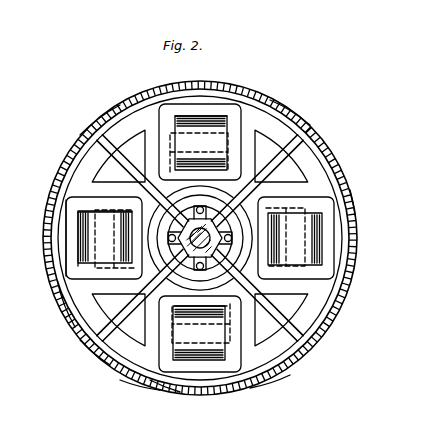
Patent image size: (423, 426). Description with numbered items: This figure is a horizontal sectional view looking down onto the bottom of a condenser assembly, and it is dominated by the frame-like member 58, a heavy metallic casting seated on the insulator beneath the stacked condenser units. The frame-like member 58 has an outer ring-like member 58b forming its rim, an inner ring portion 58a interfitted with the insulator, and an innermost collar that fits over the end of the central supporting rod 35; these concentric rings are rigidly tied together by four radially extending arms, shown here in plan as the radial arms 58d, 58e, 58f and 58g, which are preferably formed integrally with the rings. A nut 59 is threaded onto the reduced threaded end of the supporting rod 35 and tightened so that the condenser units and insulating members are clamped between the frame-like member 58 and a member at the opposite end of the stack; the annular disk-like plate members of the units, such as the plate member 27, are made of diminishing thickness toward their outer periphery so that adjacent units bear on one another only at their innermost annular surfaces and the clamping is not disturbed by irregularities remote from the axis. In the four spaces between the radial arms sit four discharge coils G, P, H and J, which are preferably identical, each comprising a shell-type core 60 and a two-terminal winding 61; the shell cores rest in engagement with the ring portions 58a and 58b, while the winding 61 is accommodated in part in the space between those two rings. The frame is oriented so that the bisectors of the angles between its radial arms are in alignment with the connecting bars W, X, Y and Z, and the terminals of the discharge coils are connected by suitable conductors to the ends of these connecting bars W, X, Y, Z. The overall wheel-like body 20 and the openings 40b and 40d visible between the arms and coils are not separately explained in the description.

The frame-like member 58 is at (291, 123).
The ring portion 58a is at (75, 327).
The outer ring-like member 58b is at (147, 362).
The radial arm 58d is at (108, 134).
The radial arm 58e is at (100, 357).
The radial arm 58f is at (272, 325).
The radial arm 58g is at (289, 128).
The rotor wheel 20 is at (2, 143).
The supporting rod 35 is at (190, 227).
The nut 59 is at (80, 222).
The discharge coil G is at (80, 230).
The annular disk-like plate member 27 is at (78, 247).
The core 60 is at (166, 108).
The winding 61 is at (192, 118).
The connecting bar W is at (115, 276).
The window opening 40b is at (140, 270).
The window opening 40d is at (305, 305).
The discharge coil P is at (200, 178).
The connecting bar X is at (231, 236).
The connecting bar Y is at (213, 188).
The connecting bar Z is at (225, 373).
The discharge coil H is at (166, 385).
The discharge coil J is at (351, 212).